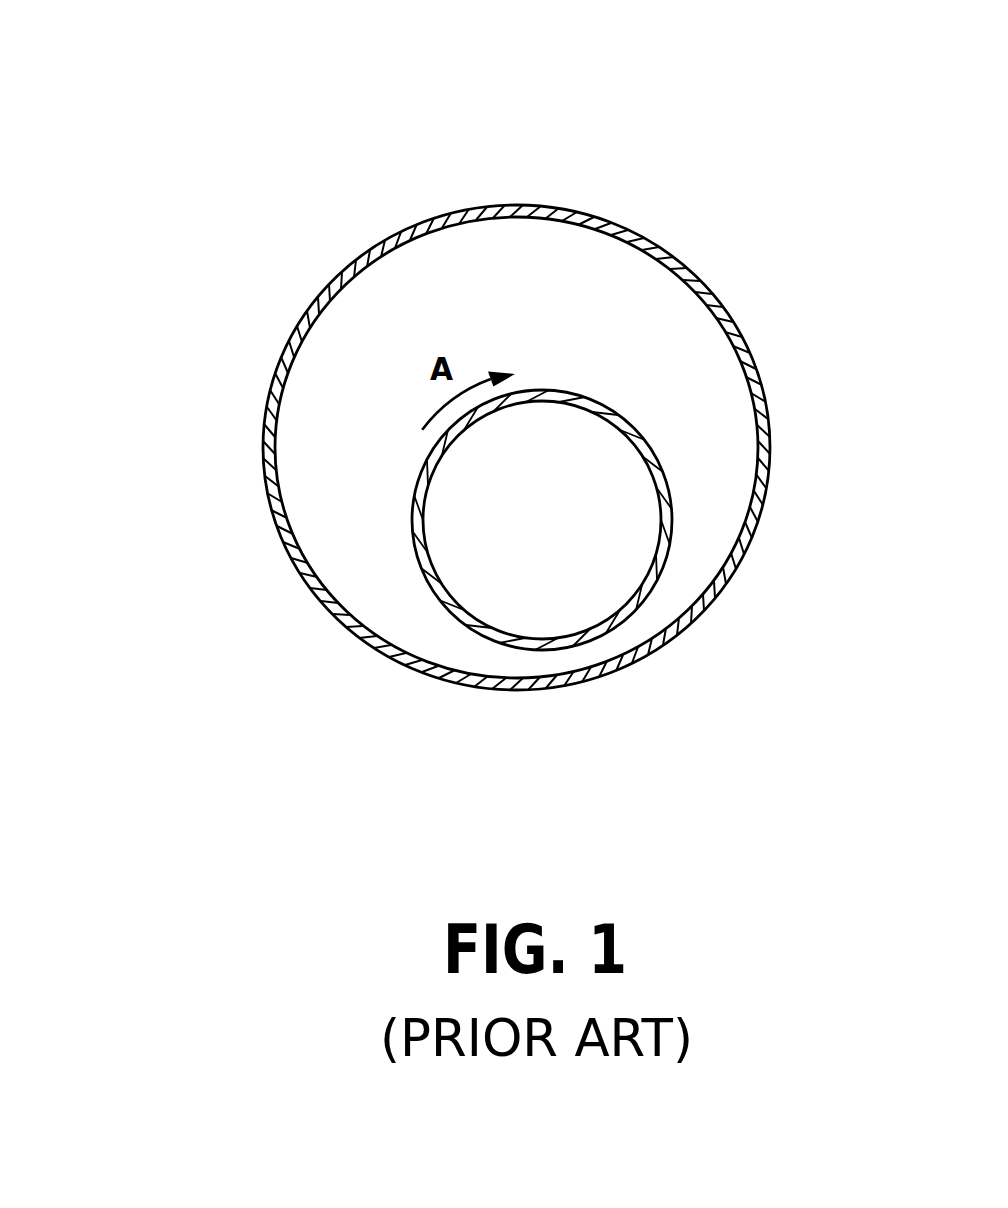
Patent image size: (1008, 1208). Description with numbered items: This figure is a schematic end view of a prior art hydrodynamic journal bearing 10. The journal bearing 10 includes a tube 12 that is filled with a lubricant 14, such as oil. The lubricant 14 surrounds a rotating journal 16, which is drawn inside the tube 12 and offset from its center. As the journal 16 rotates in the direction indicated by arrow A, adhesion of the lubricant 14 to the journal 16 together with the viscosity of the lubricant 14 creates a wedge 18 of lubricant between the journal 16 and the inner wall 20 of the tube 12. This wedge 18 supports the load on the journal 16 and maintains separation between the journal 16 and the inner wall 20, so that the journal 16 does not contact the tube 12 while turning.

The journal bearing 10 is at (150, 115).
The tube 12 is at (505, 206).
The lubricant 14 is at (608, 338).
The journal 16 is at (561, 532).
The wedge 18 is at (605, 635).
The inner wall 20 is at (278, 443).